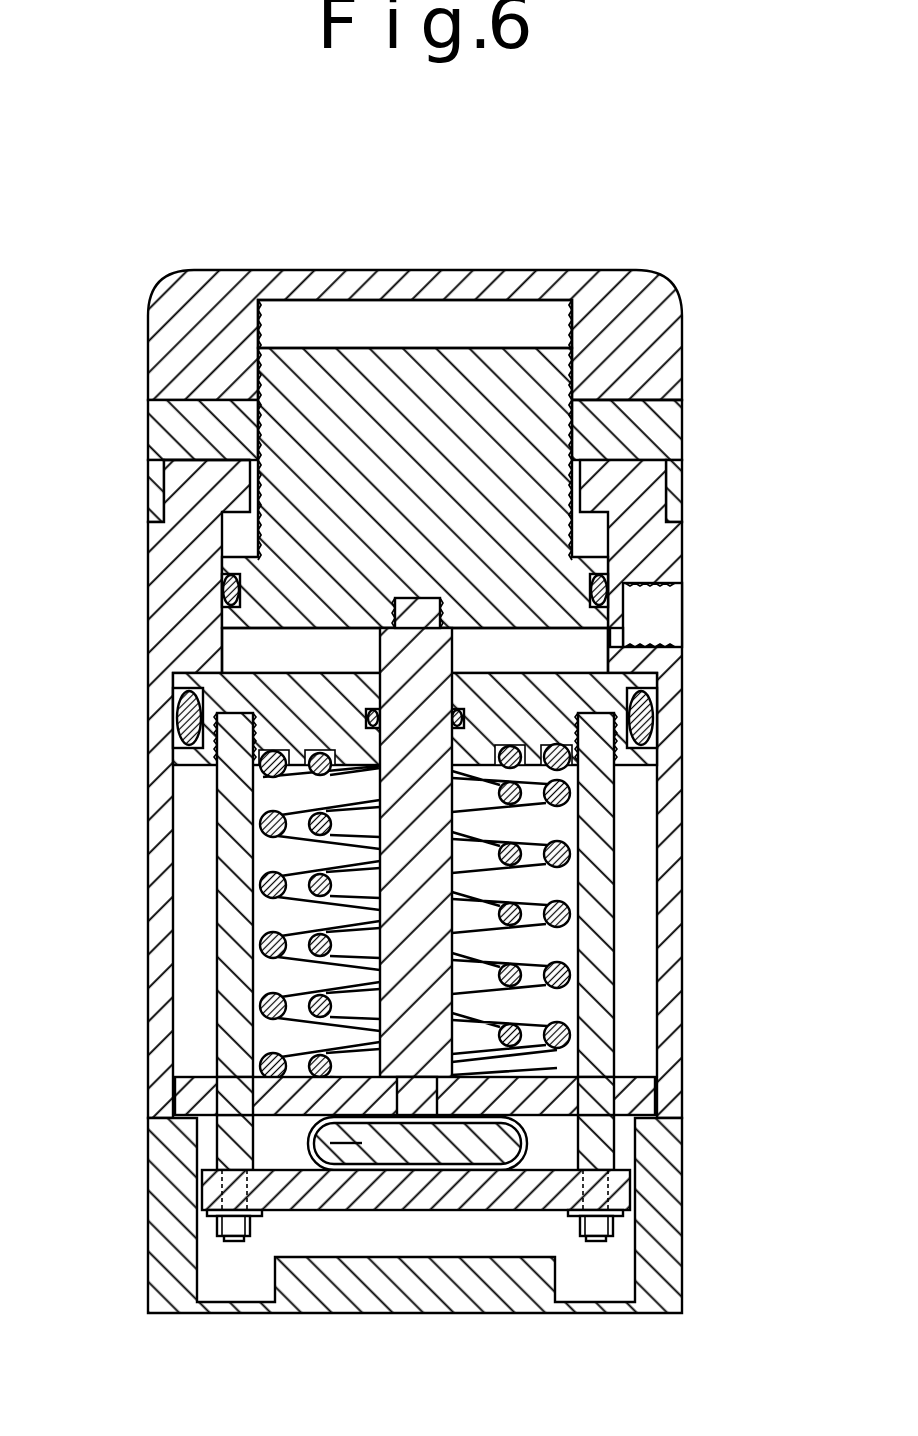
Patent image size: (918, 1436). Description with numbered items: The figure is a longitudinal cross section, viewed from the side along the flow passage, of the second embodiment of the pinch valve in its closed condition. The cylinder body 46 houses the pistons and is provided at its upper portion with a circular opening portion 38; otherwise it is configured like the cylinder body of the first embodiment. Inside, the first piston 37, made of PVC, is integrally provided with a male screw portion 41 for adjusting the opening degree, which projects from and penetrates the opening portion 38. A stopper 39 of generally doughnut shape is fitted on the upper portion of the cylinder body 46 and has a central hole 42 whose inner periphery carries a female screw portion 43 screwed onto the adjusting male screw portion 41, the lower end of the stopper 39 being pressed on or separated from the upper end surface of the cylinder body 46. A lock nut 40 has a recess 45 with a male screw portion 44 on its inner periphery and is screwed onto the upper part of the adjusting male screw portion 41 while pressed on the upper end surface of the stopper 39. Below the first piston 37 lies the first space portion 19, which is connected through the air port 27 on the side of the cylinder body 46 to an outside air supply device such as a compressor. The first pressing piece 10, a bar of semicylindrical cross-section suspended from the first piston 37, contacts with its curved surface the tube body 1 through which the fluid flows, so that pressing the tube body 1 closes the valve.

The tube body 1 is at (312, 1128).
The first pressing piece 10 is at (290, 1100).
The first space portion 19 is at (310, 653).
The air port 27 is at (648, 612).
The first piston 37 is at (462, 445).
The opening portion 38 is at (245, 485).
The stopper 39 is at (575, 408).
The lock nut 40 is at (635, 325).
The male screw portion 41 is at (525, 445).
The central hole 42 is at (640, 395).
The female screw portion 43 is at (573, 446).
The male screw portion 44 is at (258, 272).
The recess 45 is at (343, 330).
The cylinder body 46 is at (637, 538).